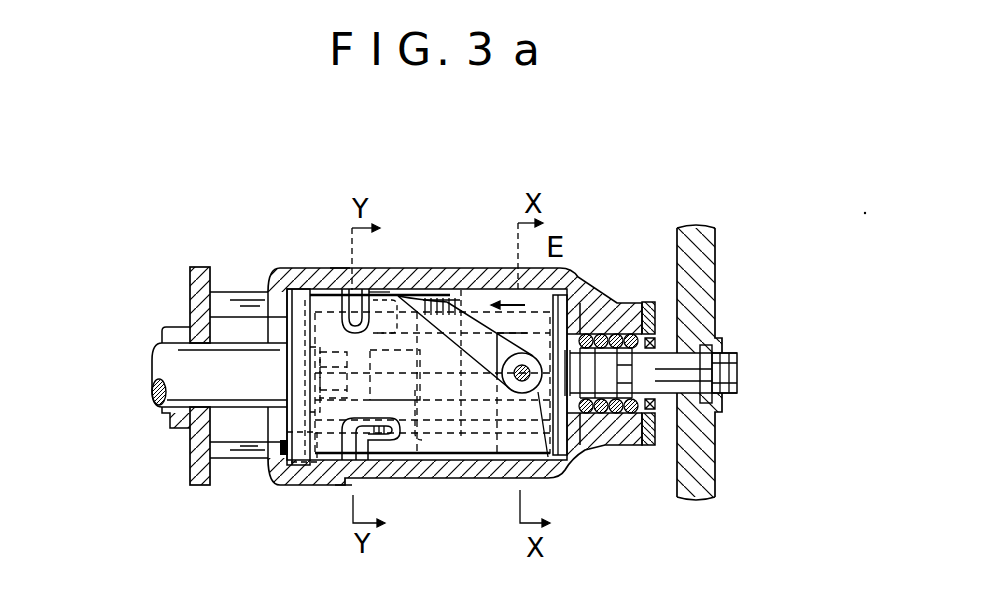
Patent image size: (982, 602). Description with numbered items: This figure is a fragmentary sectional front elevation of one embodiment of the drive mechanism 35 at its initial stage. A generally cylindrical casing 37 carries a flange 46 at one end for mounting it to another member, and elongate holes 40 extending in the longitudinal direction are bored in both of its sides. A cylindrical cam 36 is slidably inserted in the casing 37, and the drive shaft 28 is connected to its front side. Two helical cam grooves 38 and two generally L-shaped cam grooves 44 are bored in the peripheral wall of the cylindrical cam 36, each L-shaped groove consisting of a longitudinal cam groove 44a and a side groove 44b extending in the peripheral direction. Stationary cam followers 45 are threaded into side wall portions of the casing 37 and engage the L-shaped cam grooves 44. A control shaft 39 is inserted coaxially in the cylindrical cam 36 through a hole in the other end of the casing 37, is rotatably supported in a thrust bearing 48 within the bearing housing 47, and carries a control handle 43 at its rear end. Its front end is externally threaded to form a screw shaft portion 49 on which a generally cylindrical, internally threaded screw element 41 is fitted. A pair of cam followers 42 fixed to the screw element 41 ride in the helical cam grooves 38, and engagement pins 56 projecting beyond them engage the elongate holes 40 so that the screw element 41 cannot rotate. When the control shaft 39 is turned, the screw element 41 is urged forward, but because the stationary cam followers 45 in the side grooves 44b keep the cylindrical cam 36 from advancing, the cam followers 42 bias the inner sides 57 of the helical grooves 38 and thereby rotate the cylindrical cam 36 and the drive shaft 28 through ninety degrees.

The drive shaft 28 is at (154, 347).
The damper assembly 35 is at (640, 247).
The cylindrical cam 36 is at (560, 290).
The casing 37 is at (492, 289).
The helical cam grooves 38 is at (473, 298).
The control shaft 39 is at (657, 372).
The elongate holes 40 is at (413, 478).
The screw element 41 is at (583, 470).
The cam followers 42 is at (548, 457).
The control handle 43 is at (693, 452).
The L-shaped cam grooves 44 is at (272, 270).
The longitudinal cam groove 44a is at (398, 300).
The side groove 44b is at (342, 268).
The stationary cam followers 45 is at (380, 292).
The flange 46 is at (192, 268).
The bearing housing 47 is at (603, 328).
The thrust bearing 48 is at (594, 424).
The screw shaft portion 49 is at (461, 290).
The engagement pin 56 is at (523, 392).
The inner sides 57 is at (470, 342).